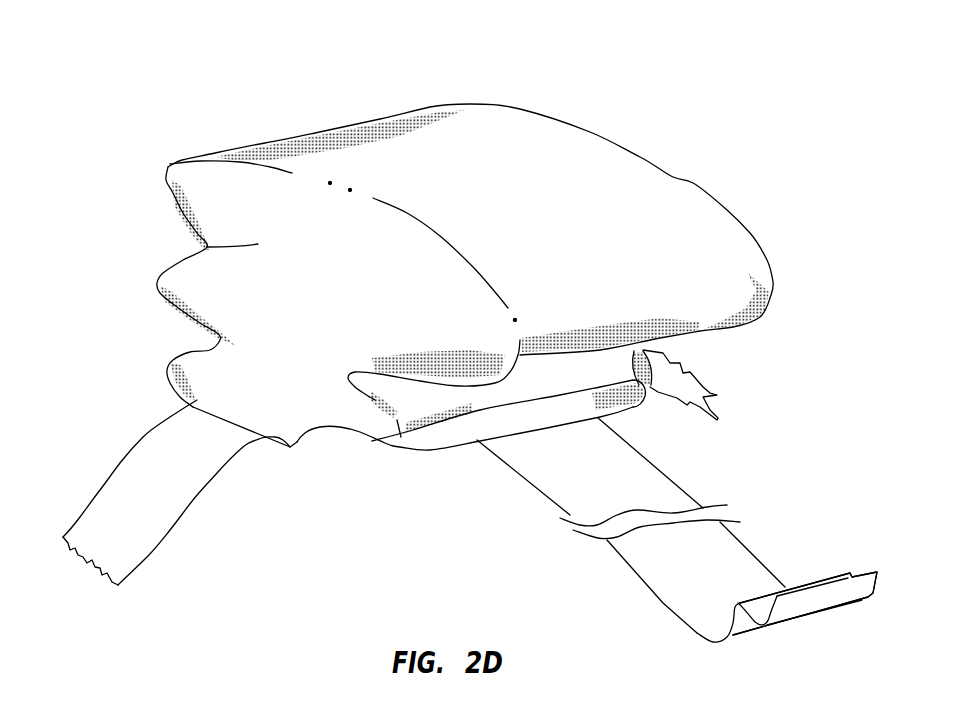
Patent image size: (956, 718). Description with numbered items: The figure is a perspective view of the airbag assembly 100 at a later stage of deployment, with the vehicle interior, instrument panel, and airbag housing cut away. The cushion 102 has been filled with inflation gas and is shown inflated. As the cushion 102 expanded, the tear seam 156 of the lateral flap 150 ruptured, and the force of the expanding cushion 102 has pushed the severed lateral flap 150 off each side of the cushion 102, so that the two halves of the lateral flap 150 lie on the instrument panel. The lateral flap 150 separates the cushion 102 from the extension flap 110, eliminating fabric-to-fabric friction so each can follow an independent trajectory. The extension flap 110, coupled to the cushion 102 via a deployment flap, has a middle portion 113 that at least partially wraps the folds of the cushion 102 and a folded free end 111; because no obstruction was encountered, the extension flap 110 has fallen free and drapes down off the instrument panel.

The airbag assembly 100 is at (647, 93).
The cushion 102 is at (210, 248).
The extension flap 110 is at (668, 567).
The free end 111 is at (815, 597).
The middle portion 113 is at (703, 597).
The lateral flap 150 is at (147, 447).
The tear seam 156 is at (707, 385).